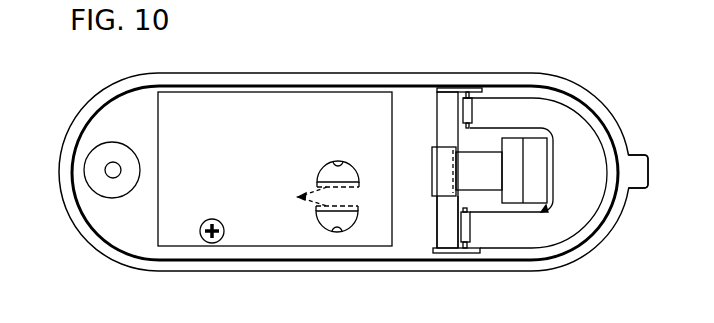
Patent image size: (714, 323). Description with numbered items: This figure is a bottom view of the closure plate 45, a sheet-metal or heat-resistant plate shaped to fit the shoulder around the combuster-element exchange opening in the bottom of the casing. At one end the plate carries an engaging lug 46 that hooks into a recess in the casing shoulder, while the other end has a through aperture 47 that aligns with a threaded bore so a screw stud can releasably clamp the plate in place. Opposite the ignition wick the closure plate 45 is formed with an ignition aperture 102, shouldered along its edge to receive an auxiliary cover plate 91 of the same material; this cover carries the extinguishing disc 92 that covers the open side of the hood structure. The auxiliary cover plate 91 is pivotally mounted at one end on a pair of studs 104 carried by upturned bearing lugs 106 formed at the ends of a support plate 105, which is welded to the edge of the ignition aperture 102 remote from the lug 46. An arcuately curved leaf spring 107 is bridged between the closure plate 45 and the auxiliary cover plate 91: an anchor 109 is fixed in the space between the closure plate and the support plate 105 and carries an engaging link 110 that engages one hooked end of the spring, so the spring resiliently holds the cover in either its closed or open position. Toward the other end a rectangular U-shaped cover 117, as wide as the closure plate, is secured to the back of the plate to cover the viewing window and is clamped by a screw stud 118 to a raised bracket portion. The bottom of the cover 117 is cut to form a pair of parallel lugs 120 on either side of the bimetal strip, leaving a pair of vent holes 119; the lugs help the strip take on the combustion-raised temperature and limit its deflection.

The closure plate 45 is at (298, 73).
The engaging lug 46 is at (637, 186).
The through aperture 47 is at (113, 162).
The auxiliary cover plate 91 is at (485, 138).
The extinguishing disc 92 is at (543, 168).
The ignition aperture 102 is at (547, 214).
The studs 104 is at (471, 123).
The support plate 105 is at (447, 99).
The bearing lugs 106 is at (456, 90).
The leaf spring 107 is at (488, 182).
The anchor 109 is at (443, 197).
The engaging link 110 is at (450, 162).
The rectangular cover 117 is at (252, 238).
The screw stud 118 is at (212, 219).
The vent holes 119 is at (340, 165).
The parallel lugs 120 is at (292, 198).